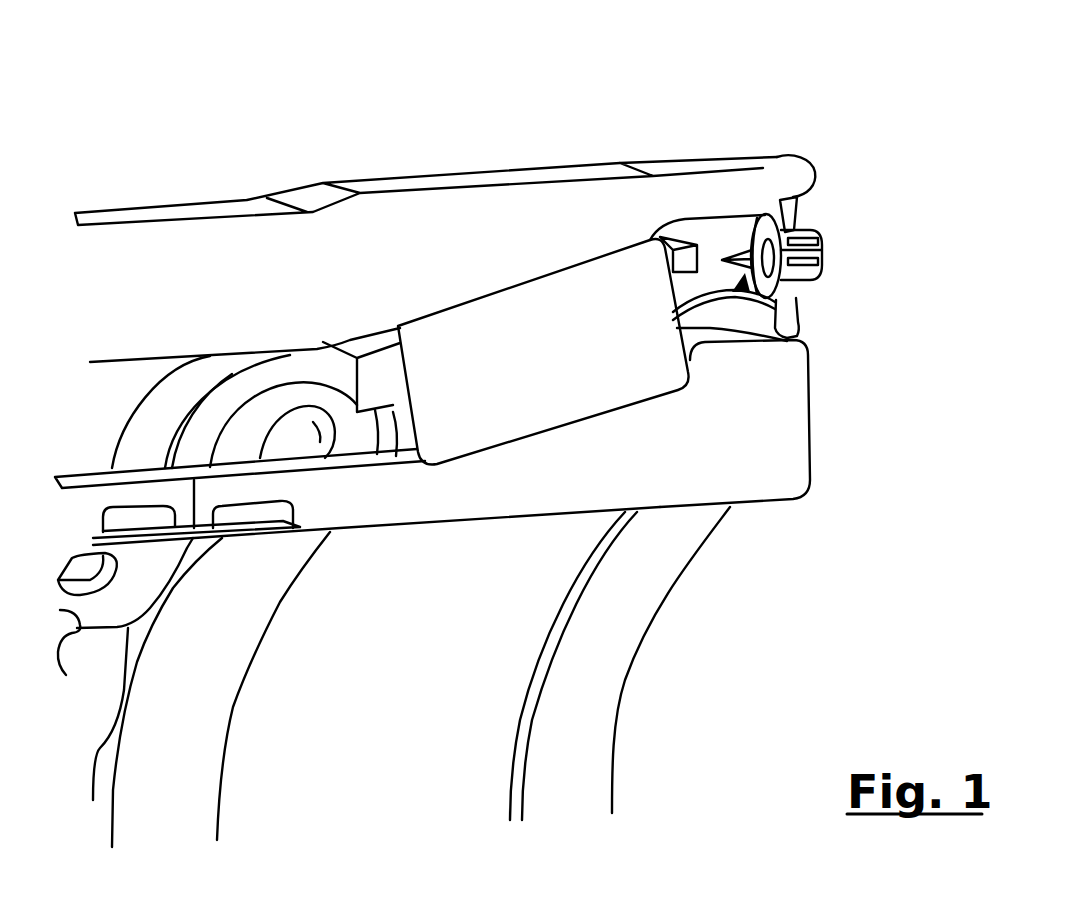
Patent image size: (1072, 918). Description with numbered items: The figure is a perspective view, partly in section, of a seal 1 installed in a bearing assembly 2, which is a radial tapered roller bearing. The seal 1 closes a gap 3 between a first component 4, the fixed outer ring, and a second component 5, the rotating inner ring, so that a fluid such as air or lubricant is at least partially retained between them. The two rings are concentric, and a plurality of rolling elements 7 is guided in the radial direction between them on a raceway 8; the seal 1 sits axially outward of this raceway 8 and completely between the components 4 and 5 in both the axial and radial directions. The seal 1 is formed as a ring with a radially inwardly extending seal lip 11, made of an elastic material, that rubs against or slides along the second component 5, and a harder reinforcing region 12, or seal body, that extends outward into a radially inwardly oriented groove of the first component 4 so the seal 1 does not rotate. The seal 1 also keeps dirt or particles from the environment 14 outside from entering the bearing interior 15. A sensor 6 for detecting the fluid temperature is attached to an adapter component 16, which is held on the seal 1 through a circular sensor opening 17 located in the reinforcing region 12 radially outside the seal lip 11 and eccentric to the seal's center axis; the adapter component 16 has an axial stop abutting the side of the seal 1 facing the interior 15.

The seal 1 is at (818, 203).
The bearing assembly 2 is at (869, 192).
The gap 3 is at (780, 328).
The first component 4 is at (720, 190).
The second component 5 is at (783, 483).
The sensor 6 is at (797, 326).
The rolling elements 7 is at (290, 437).
The raceway 8 is at (617, 413).
The seal lip 11 is at (815, 352).
The reinforcing region 12 is at (820, 253).
The environment 14 is at (1028, 599).
The interior 15 is at (710, 250).
The adapter component 16 is at (765, 215).
The sensor opening 17 is at (820, 280).